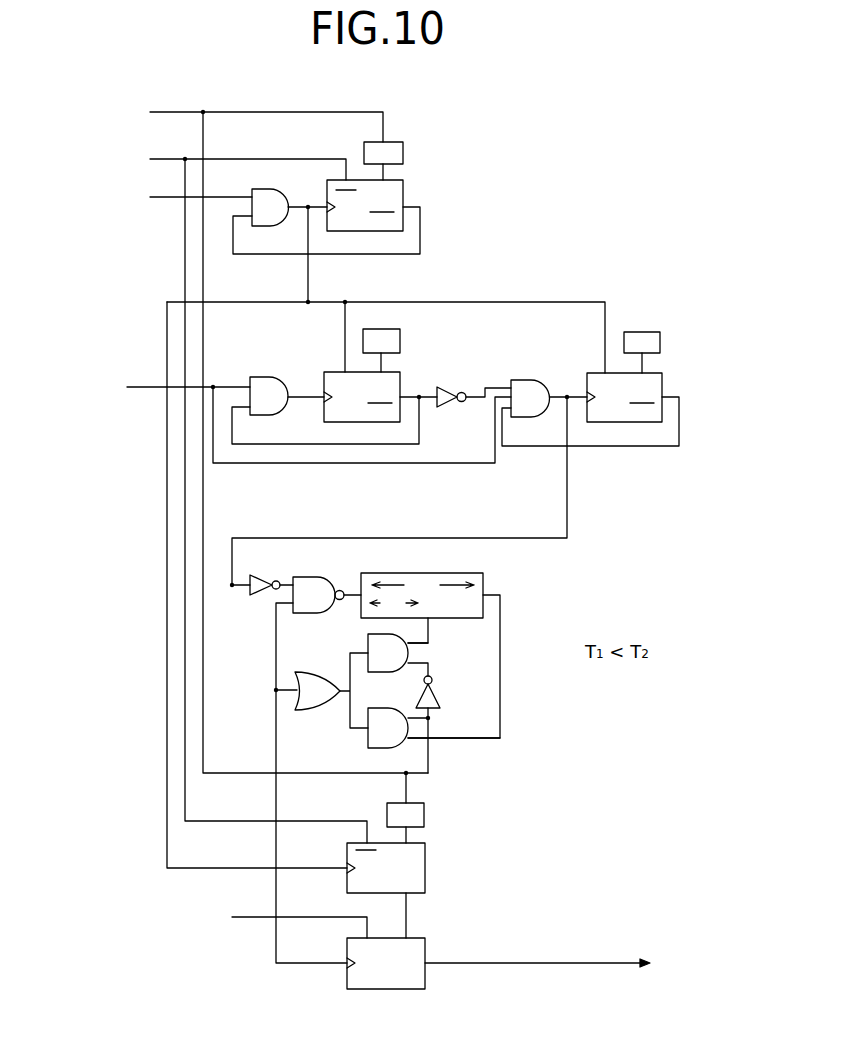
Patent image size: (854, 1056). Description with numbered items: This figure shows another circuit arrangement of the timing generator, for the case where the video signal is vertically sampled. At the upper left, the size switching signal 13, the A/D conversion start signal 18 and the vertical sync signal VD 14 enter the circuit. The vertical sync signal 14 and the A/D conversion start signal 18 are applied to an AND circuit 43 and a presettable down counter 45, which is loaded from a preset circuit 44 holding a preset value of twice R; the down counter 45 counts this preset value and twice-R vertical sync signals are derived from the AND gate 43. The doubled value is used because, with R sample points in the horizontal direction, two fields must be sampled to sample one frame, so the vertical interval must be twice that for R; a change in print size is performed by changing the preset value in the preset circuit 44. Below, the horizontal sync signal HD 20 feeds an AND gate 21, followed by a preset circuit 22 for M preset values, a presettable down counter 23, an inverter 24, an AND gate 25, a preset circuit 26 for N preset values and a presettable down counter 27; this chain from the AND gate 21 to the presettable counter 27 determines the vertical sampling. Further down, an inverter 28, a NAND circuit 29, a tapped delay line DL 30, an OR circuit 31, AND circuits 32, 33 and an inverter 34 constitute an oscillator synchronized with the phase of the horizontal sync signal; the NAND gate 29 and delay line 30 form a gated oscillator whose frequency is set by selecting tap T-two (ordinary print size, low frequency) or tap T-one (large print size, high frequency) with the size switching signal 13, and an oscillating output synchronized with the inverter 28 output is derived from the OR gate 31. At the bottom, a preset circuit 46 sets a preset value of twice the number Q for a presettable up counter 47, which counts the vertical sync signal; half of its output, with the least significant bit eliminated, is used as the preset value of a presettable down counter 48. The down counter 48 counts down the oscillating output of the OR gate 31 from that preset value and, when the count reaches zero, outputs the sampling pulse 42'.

The size switching signal 13 is at (92, 98).
The A/D conversion start signal 18 is at (72, 150).
The vertical sync signal VD 14 is at (61, 208).
The horizontal sync signal HD 20 is at (69, 371).
The AND gate 21 is at (270, 375).
The preset circuit 22 is at (400, 336).
The presettable down counter 23 is at (400, 378).
The inverter 24 is at (452, 390).
The AND gate 25 is at (529, 384).
The preset circuit 26 is at (664, 348).
The presettable down counter 27 is at (664, 386).
The inverter 28 is at (265, 571).
The NAND circuit 29 is at (320, 582).
The tapped delay line DL 30 is at (476, 579).
The OR circuit 31 is at (320, 678).
The AND circuit 32 is at (426, 654).
The AND circuit 33 is at (388, 718).
The inverter 34 is at (441, 698).
The AND circuit 43 is at (270, 194).
The preset circuit 44 is at (404, 144).
The presettable down counter 45 is at (404, 190).
The preset circuit 46 is at (427, 810).
The presettable up counter 47 is at (427, 872).
The presettable down counter 48 is at (427, 950).
The sampling pulse 42' is at (597, 953).